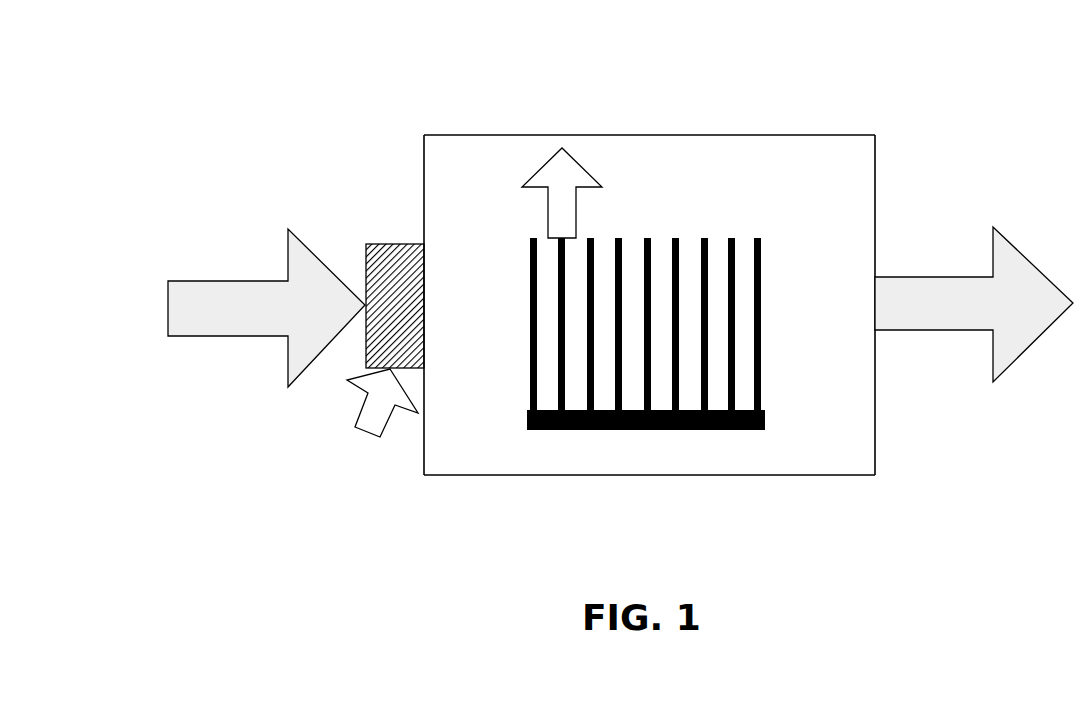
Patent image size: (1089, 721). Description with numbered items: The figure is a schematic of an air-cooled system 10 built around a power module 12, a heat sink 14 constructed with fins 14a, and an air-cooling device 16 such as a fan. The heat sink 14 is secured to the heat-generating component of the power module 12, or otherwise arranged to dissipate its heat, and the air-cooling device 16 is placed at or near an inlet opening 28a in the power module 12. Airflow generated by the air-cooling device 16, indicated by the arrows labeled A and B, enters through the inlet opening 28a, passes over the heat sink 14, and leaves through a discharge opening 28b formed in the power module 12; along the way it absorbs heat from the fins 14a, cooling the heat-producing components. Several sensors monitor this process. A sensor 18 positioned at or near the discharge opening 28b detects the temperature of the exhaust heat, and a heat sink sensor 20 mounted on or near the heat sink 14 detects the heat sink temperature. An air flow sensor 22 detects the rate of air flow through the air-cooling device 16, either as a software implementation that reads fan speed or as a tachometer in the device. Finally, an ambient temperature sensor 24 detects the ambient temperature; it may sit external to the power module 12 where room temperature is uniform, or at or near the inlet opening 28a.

The air-cooled system 10 is at (396, 77).
The power module 12 is at (790, 184).
The heat sink 14 is at (545, 432).
The fins 14a is at (530, 340).
The air-cooling device 16 is at (388, 232).
The sensor 18 is at (930, 225).
The heat sink sensor 20 is at (813, 432).
The air flow sensor 22 is at (333, 472).
The ambient temperature sensor 24 is at (235, 222).
The inlet opening 28a is at (435, 303).
The discharge opening 28b is at (873, 300).